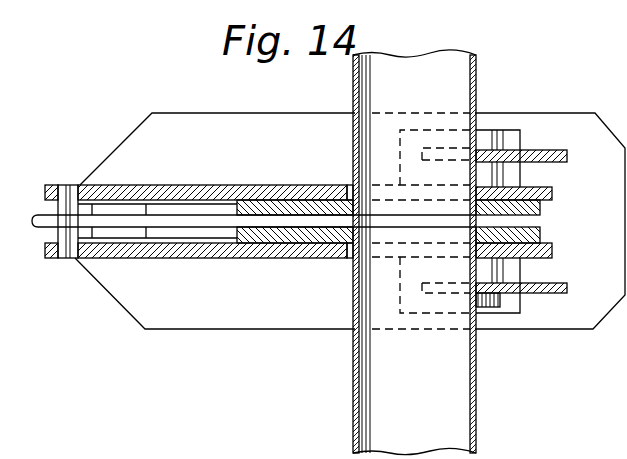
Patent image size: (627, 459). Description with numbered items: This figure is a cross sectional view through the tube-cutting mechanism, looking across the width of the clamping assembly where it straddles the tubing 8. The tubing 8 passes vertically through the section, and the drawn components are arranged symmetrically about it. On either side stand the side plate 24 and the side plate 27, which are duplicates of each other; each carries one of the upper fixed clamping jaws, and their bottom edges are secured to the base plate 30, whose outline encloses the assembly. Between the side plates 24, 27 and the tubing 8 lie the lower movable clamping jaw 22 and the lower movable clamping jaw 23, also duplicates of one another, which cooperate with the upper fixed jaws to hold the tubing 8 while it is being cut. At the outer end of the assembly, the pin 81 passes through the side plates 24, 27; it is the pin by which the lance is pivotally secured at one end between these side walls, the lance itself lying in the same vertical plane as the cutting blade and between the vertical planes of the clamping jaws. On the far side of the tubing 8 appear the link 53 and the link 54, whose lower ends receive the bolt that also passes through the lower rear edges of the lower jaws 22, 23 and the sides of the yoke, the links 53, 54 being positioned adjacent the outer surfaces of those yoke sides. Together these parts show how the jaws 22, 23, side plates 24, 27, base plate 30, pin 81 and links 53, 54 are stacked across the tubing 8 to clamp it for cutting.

The tubing 8 is at (350, 398).
The lower movable clamping jaw 22 is at (285, 207).
The lower movable clamping jaw 23 is at (309, 250).
The side plate 24 is at (210, 190).
The side plate 27 is at (193, 252).
The base plate 30 is at (233, 329).
The link 53 is at (567, 288).
The link 54 is at (567, 156).
The pin 81 is at (66, 240).